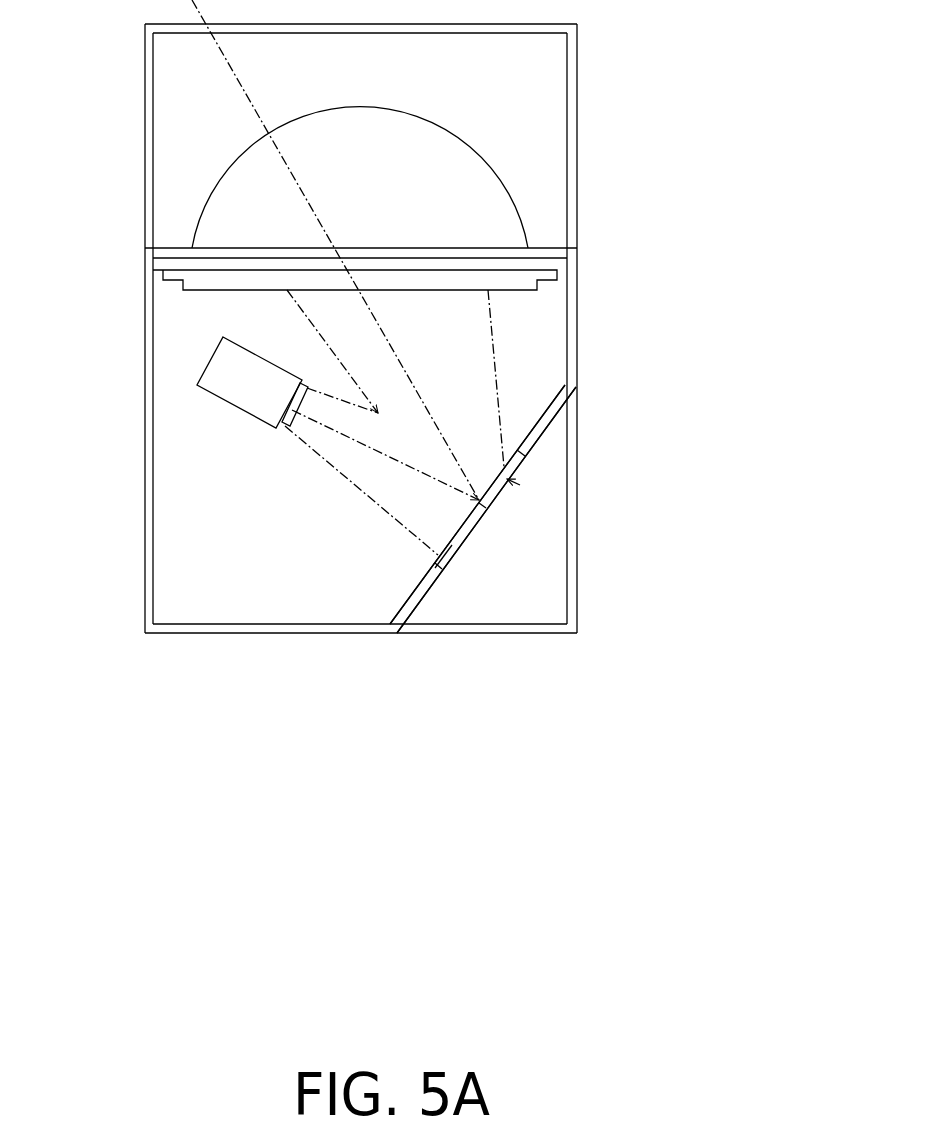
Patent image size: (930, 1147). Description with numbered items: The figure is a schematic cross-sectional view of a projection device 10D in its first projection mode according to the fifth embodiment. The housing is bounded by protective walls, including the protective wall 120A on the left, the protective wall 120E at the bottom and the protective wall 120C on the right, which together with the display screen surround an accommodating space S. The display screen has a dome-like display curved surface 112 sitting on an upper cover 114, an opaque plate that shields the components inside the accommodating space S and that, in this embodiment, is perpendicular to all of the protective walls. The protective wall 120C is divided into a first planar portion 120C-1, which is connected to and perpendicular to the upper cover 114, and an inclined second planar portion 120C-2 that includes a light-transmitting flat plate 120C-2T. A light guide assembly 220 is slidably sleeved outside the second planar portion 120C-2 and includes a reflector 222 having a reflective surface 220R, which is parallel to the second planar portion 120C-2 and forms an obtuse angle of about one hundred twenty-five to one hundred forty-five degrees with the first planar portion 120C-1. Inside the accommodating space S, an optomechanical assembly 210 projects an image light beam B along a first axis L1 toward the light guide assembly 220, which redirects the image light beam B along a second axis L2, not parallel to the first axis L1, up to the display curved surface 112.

The projection device 10D is at (658, 865).
The display curved surface 112 is at (483, 202).
The upper cover 114 is at (548, 256).
The protective wall 120A is at (148, 503).
The protective wall 120E is at (237, 633).
The protective wall 120C is at (590, 328).
The first planar portion 120C-1 is at (575, 350).
The second planar portion 120C-2 is at (551, 509).
The light-transmitting flat plate 120C-2T is at (452, 545).
The optomechanical assembly 210 is at (217, 368).
The light guide assembly 220 is at (533, 509).
The reflective surface 220R is at (520, 485).
The reflector 222 is at (475, 530).
The accommodating space S is at (182, 327).
The first axis L1 is at (362, 443).
The second axis L2 is at (238, 80).
The image light beam B is at (380, 507).